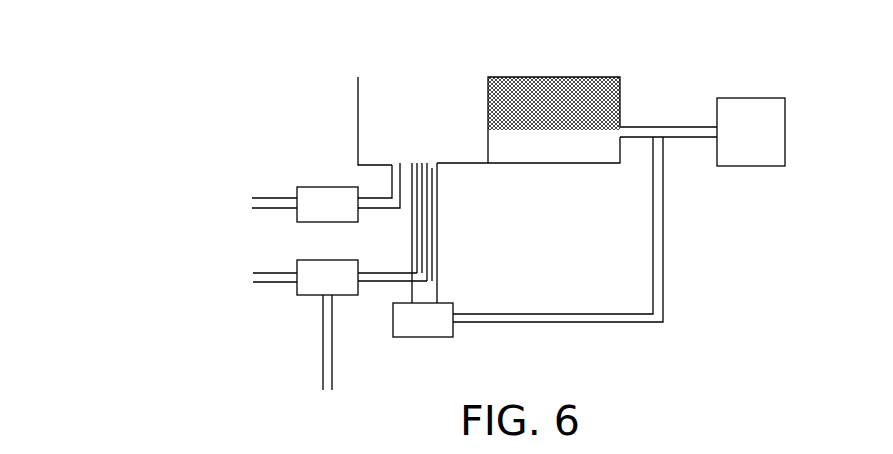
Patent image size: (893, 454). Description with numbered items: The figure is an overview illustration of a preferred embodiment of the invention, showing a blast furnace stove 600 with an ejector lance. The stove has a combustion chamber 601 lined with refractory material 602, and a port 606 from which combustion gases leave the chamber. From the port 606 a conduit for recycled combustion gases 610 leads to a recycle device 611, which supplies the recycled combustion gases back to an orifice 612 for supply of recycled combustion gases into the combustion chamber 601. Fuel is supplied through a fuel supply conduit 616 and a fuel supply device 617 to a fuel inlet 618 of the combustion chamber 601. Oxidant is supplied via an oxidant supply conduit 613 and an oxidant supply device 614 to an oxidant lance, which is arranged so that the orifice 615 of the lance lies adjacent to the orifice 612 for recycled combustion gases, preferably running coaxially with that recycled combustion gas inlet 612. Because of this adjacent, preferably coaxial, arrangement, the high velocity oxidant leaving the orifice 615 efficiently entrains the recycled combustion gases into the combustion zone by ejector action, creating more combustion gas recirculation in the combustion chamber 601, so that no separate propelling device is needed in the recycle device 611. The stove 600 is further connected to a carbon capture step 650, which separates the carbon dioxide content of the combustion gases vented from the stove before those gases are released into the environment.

The blast furnace stove 600 is at (661, 348).
The combustion chamber 601 is at (376, 84).
The refractory material 602 is at (573, 88).
The port 606 is at (611, 131).
The conduit for recycled combustion gases 610 is at (666, 243).
The recycle device 611 is at (425, 338).
The orifice for supply of recycled combustion gases 612 is at (415, 162).
The oxidant supply conduit 613 is at (322, 352).
The oxidant supply device 614 is at (345, 296).
The orifice of the lance 615 is at (424, 162).
The fuel supply conduit 616 is at (268, 196).
The fuel supply device 617 is at (296, 217).
The fuel inlet 618 is at (397, 162).
The carbon capture step 650 is at (748, 98).